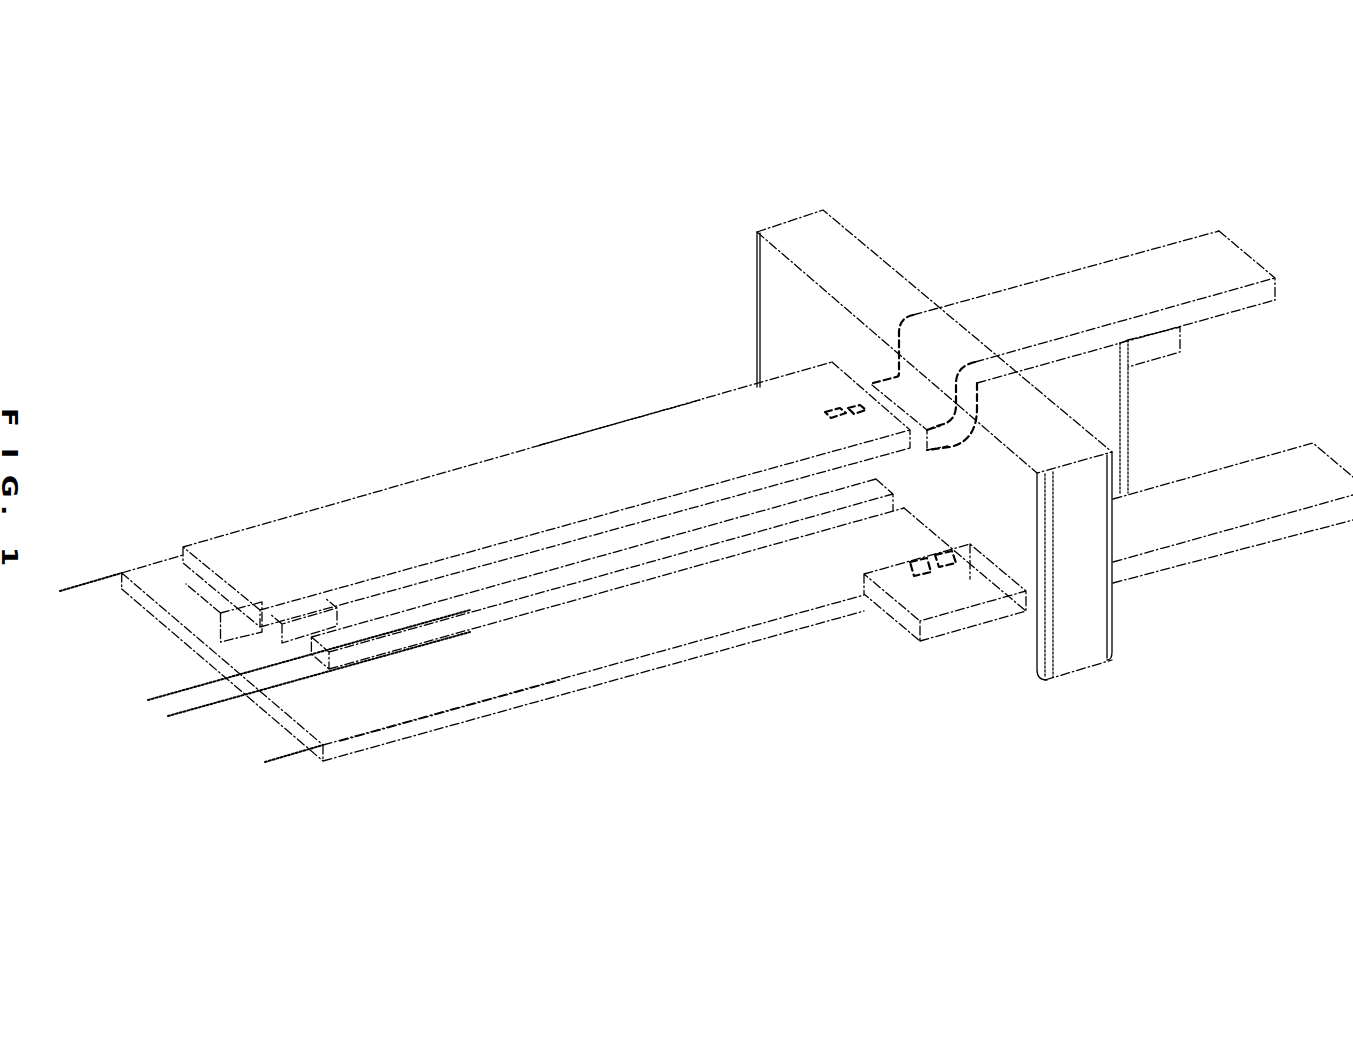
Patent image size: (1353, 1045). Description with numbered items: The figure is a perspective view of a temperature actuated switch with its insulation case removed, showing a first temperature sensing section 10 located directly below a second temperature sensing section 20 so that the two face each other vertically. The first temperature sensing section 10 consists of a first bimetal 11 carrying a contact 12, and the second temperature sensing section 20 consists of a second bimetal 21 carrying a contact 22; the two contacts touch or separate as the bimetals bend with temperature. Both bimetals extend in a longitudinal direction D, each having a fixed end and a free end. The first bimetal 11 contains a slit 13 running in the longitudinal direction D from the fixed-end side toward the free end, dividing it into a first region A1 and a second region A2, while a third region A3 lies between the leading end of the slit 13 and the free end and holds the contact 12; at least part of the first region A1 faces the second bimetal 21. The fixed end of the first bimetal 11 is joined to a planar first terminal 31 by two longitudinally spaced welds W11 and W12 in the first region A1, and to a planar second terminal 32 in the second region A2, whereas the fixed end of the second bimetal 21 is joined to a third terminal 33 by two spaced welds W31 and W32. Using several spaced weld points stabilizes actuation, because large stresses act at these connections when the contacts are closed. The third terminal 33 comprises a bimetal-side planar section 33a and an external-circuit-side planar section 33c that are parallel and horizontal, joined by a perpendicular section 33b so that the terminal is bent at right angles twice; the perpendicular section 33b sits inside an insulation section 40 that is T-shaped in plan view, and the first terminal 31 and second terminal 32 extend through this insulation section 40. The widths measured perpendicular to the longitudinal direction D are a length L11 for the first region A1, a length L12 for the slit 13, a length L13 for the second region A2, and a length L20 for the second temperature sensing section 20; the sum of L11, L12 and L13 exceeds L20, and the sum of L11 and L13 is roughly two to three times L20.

The first temperature sensing section 10 is at (627, 678).
The first bimetal 11 is at (562, 687).
The contact 12 is at (237, 615).
The slit 13 is at (512, 622).
The second temperature sensing section 20 is at (530, 450).
The second bimetal 21 is at (597, 455).
The contact 22 is at (307, 620).
The first terminal 31 is at (1228, 543).
The second terminal 32 is at (1177, 343).
The third terminal 33 is at (1092, 267).
The bimetal-side planar section 33a is at (872, 388).
The perpendicular section 33b is at (975, 395).
The external-circuit-side planar section 33c is at (1215, 285).
The insulation section 40 is at (1095, 645).
The weld W11 is at (915, 580).
The weld W12 is at (942, 570).
The weld W31 is at (830, 418).
The weld W32 is at (852, 412).
The first region A1 is at (730, 627).
The second region A2 is at (740, 527).
The third region A3 is at (337, 770).
The length L11 is at (287, 739).
The length L12 is at (213, 718).
The length L13 is at (205, 670).
The length L20 is at (342, 503).
The longitudinal direction D is at (425, 422).